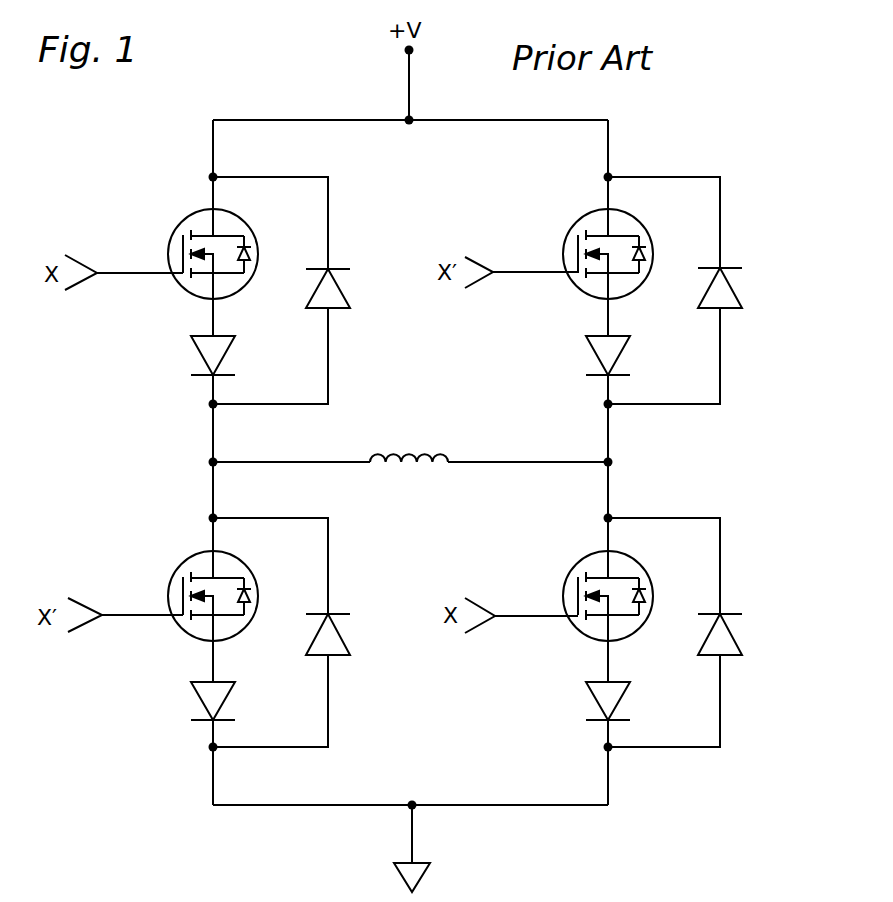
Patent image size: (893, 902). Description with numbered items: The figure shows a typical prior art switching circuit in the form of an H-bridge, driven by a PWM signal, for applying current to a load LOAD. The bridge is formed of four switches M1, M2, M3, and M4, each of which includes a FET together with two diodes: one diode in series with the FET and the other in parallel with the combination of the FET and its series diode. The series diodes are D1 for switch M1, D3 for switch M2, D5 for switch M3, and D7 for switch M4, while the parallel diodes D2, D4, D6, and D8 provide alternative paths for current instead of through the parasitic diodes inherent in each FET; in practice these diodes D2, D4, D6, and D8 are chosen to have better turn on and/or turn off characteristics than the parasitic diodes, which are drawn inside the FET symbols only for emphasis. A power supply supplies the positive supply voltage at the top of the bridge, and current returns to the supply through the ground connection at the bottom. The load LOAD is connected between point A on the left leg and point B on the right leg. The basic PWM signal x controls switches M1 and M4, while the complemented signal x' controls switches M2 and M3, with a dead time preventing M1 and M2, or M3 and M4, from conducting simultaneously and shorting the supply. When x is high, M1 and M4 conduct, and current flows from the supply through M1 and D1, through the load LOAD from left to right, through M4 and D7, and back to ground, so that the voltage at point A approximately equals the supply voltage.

The switch M1 is at (199, 249).
The switch M2 is at (195, 592).
The switch M3 is at (589, 251).
The switch M4 is at (589, 592).
The series diode D1 is at (228, 355).
The parallel diode D2 is at (343, 288).
The series diode D3 is at (228, 701).
The parallel diode D4 is at (344, 634).
The series diode D5 is at (625, 355).
The parallel diode D6 is at (737, 288).
The series diode D7 is at (625, 701).
The parallel diode D8 is at (738, 634).
The load LOAD is at (409, 441).
The point A is at (278, 461).
The point B is at (541, 461).